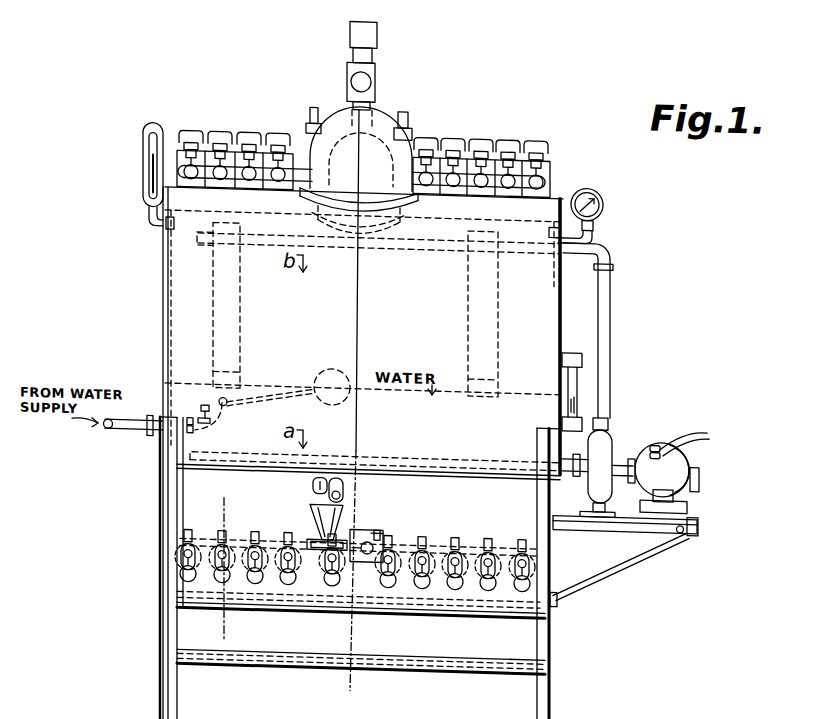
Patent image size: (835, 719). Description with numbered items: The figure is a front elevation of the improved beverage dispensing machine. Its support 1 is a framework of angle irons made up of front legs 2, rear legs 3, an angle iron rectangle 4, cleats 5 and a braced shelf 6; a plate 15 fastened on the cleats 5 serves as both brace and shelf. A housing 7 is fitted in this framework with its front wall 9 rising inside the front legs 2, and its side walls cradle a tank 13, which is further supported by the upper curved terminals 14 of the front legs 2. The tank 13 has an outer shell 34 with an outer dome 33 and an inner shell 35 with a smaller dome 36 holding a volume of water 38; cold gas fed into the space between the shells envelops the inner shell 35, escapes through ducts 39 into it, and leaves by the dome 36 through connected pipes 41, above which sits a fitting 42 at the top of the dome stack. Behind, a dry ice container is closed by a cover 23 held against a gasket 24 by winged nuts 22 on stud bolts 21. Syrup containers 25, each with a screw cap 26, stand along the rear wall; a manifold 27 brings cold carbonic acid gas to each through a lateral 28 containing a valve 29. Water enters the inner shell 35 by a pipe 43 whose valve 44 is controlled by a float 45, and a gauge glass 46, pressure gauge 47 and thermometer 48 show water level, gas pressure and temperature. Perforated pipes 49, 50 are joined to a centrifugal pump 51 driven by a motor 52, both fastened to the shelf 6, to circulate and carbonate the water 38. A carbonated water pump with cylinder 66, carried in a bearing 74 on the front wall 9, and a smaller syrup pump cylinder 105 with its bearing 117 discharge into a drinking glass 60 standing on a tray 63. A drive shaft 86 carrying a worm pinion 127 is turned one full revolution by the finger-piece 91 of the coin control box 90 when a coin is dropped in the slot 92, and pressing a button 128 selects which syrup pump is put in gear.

The support 1 is at (157, 598).
The front legs 2 is at (207, 606).
The rear legs 3 is at (397, 15).
The angle iron rectangle 4 is at (233, 496).
The cleats 5 is at (177, 463).
The braced shelf 6 is at (698, 506).
The housing 7 is at (187, 504).
The front wall 9 is at (188, 516).
The tank 13 is at (163, 287).
The upper curved terminals 14 is at (168, 408).
The plate 15 is at (227, 650).
The stud bolts 21 is at (315, 100).
The winged nuts 22 is at (310, 109).
The cover 23 is at (413, 120).
The gasket 24 is at (395, 133).
The syrup containers 25 is at (200, 176).
The screw cap 26 is at (223, 125).
The manifold 27 is at (198, 141).
The lateral 28 is at (208, 141).
The valve 29 is at (220, 126).
The outer dome 33 is at (377, 101).
The outer shell 34 is at (177, 352).
The inner shell 35 is at (157, 195).
The dome 36 is at (455, 114).
The water 38 is at (203, 372).
The ducts 39 is at (213, 254).
The connected pipes 41 is at (375, 67).
The cap 42 is at (370, 19).
The pipe 43 is at (130, 423).
The valve 44 is at (175, 428).
The float 45 is at (320, 360).
The gauge glass 46 is at (578, 363).
The pressure gauge 47 is at (603, 197).
The thermometer 48 is at (143, 164).
The perforated pipe 49 is at (197, 229).
The perforated pipe 50 is at (185, 474).
The centrifugal pump 51 is at (598, 420).
The motor 52 is at (657, 425).
The drinking glass 60 is at (342, 514).
The tray 63 is at (333, 532).
The cylinder 66 is at (352, 569).
The bearing 74 is at (338, 563).
The drive shaft 86 is at (208, 527).
The coin control box 90 is at (355, 521).
The finger-piece 91 is at (380, 525).
The slot 92 is at (388, 529).
The pump cylinder 105 is at (262, 570).
The bearing 117 is at (230, 561).
The worm pinion 127 is at (247, 526).
The button 128 is at (225, 575).